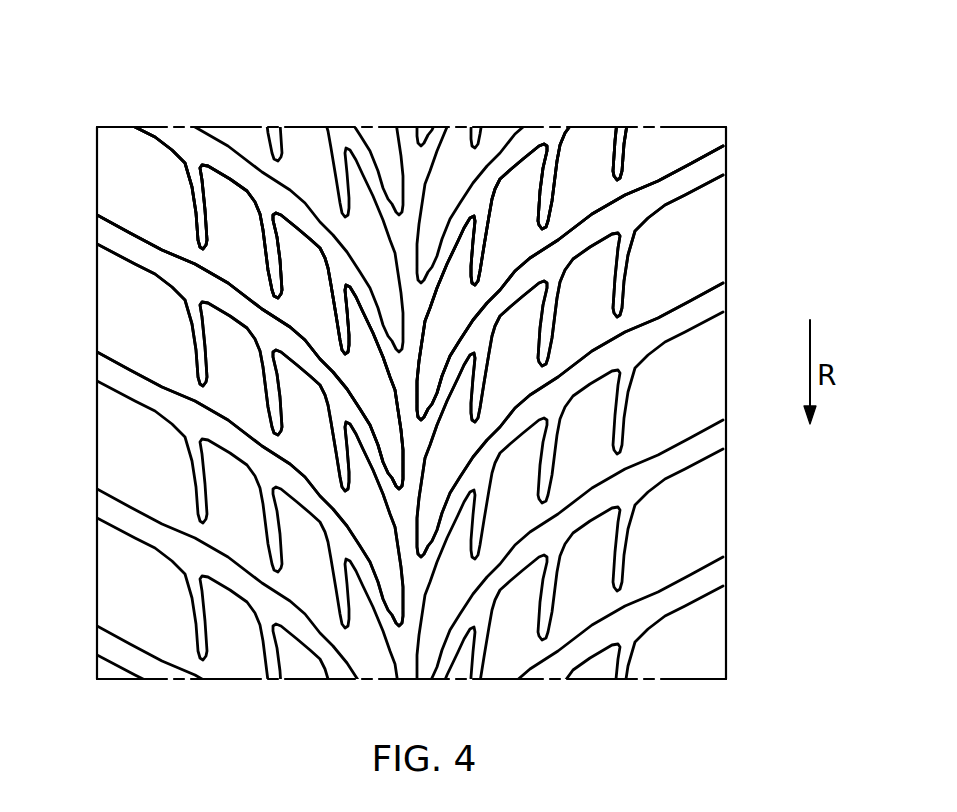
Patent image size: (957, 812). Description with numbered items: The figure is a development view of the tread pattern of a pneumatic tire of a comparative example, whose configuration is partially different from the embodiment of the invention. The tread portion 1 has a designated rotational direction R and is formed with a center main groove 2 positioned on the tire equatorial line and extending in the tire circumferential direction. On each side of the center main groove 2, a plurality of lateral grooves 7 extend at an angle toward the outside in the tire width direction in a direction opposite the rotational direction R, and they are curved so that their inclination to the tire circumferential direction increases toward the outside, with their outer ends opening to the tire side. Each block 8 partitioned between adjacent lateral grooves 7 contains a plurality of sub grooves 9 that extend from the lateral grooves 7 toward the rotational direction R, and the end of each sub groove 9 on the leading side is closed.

The tread portion 1 is at (682, 122).
The center main groove 2 is at (422, 135).
The lateral grooves 7 is at (212, 153).
The block 8 is at (150, 170).
The sub grooves 9 is at (265, 386).